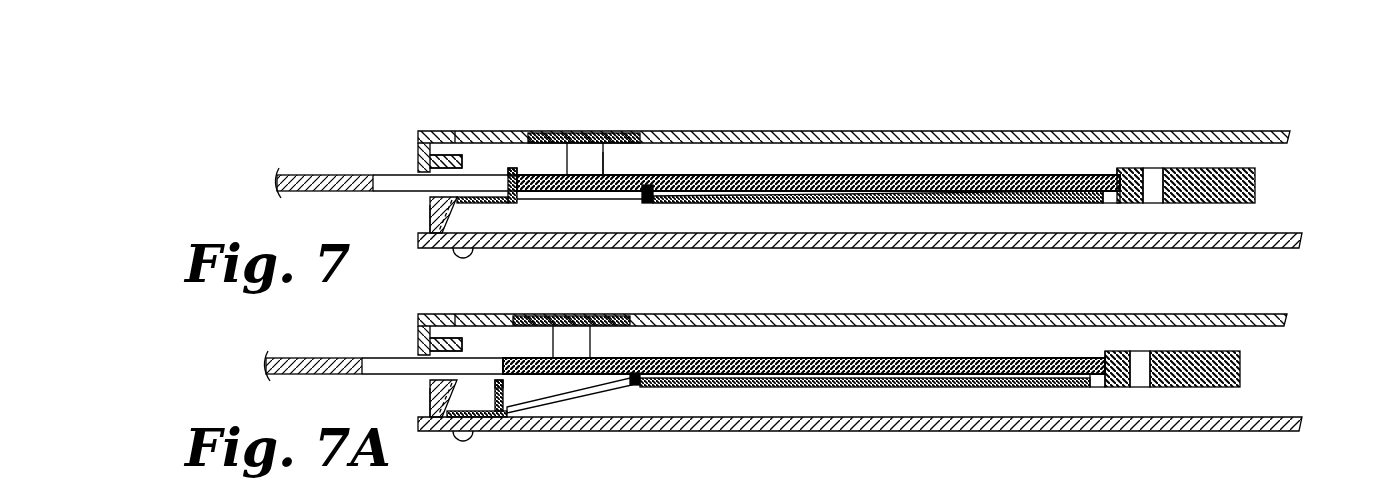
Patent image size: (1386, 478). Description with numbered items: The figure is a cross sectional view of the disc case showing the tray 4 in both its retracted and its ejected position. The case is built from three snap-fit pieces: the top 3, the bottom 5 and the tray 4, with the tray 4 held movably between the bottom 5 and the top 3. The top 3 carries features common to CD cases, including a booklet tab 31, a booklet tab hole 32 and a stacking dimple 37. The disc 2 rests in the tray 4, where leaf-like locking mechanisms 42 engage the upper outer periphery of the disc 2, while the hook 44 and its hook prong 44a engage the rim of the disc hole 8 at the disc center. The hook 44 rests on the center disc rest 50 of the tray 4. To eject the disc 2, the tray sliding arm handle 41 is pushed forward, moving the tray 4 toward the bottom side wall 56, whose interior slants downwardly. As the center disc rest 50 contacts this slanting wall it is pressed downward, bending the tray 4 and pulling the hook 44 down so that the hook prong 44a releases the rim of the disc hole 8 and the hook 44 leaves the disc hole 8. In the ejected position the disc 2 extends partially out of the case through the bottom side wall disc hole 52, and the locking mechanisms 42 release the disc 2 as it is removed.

In FIG. 7, the disc 2 is at (292, 174).
In FIG. 7A, the disc 2 is at (295, 358).
In FIG. 7, the top 3 is at (1222, 132).
In FIG. 7A, the top 3 is at (1192, 315).
In FIG. 7, the tray 4 is at (1255, 182).
In FIG. 7A, the tray 4 is at (1240, 368).
In FIG. 7, the bottom 5 is at (1235, 248).
In FIG. 7A, the bottom 5 is at (1233, 431).
In FIG. 7, the disc hole 8 is at (383, 175).
In FIG. 7A, the disc hole 8 is at (370, 358).
In FIG. 7, the booklet tab 31 is at (450, 155).
In FIG. 7A, the booklet tab 31 is at (450, 338).
In FIG. 7, the booklet tab hole 32 is at (418, 148).
In FIG. 7A, the booklet tab hole 32 is at (418, 331).
In FIG. 7, the stacking dimple 37 is at (460, 133).
In FIG. 7A, the stacking dimple 37 is at (460, 316).
In FIG. 7, the tray sliding arm handle 41 is at (603, 152).
In FIG. 7A, the tray sliding arm handle 41 is at (590, 335).
In FIG. 7, the locking mechanism 42 is at (1117, 168).
In FIG. 7A, the locking mechanism 42 is at (1105, 351).
In FIG. 7, the hook 44 is at (508, 168).
In FIG. 7A, the hook 44 is at (495, 397).
In FIG. 7, the hook prong 44a is at (522, 165).
In FIG. 7A, the hook prong 44a is at (505, 383).
In FIG. 7, the center disc rest 50 is at (488, 197).
In FIG. 7A, the center disc rest 50 is at (477, 411).
In FIG. 7, the bottom side wall disc hole 52 is at (443, 197).
In FIG. 7A, the bottom side wall disc hole 52 is at (441, 380).
In FIG. 7, the bottom side wall 56 is at (430, 220).
In FIG. 7A, the bottom side wall 56 is at (430, 403).